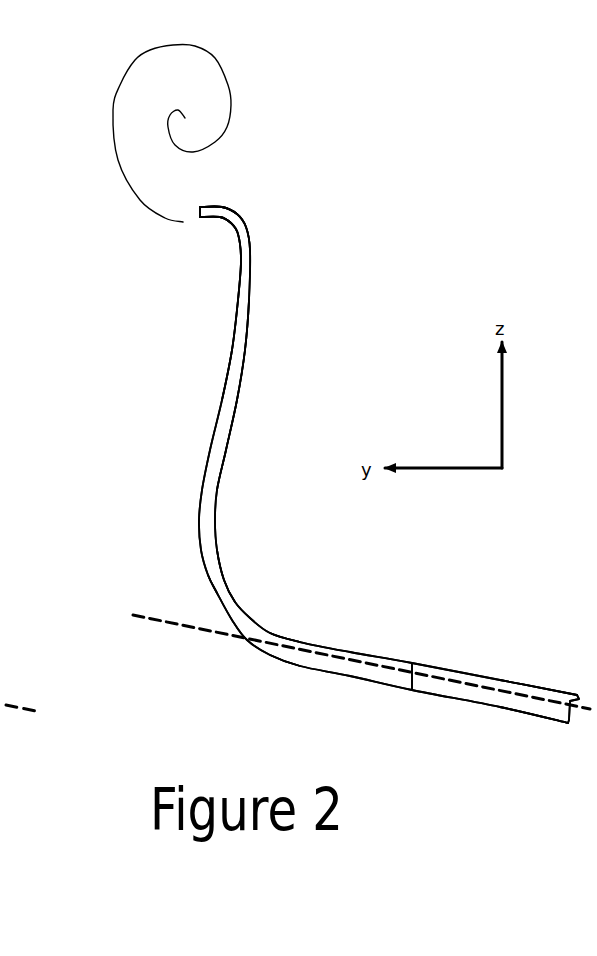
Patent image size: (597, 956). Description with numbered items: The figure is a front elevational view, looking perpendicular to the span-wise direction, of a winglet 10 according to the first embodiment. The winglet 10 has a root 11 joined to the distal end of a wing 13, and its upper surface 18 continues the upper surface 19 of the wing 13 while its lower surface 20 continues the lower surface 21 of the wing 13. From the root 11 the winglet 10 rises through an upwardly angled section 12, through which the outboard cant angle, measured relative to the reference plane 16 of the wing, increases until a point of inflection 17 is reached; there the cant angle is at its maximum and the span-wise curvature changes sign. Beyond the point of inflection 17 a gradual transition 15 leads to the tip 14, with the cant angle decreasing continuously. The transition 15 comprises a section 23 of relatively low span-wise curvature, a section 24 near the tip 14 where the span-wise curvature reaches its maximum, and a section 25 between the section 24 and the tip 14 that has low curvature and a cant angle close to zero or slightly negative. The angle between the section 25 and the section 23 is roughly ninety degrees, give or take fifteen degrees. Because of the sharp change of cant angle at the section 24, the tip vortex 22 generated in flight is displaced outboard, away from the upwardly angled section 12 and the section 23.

The winglet 10 is at (357, 350).
The root 11 is at (412, 660).
The upwardly angled section 12 is at (230, 595).
The wing 13 is at (550, 648).
The tip 14 is at (198, 218).
The gradual transition 15 is at (268, 298).
The reference plane 16 is at (190, 627).
The point of inflection 17 is at (230, 415).
The upper surface 18 is at (335, 650).
The upper surface 19 is at (510, 682).
The lower surface 20 is at (315, 670).
The lower surface 21 is at (472, 702).
The tip vortex 22 is at (113, 106).
The section with relatively low span-wise curvature 23 is at (238, 340).
The section of maximum span-wise curvature 24 is at (238, 223).
The section between maximum-curvature section and tip 25 is at (210, 205).